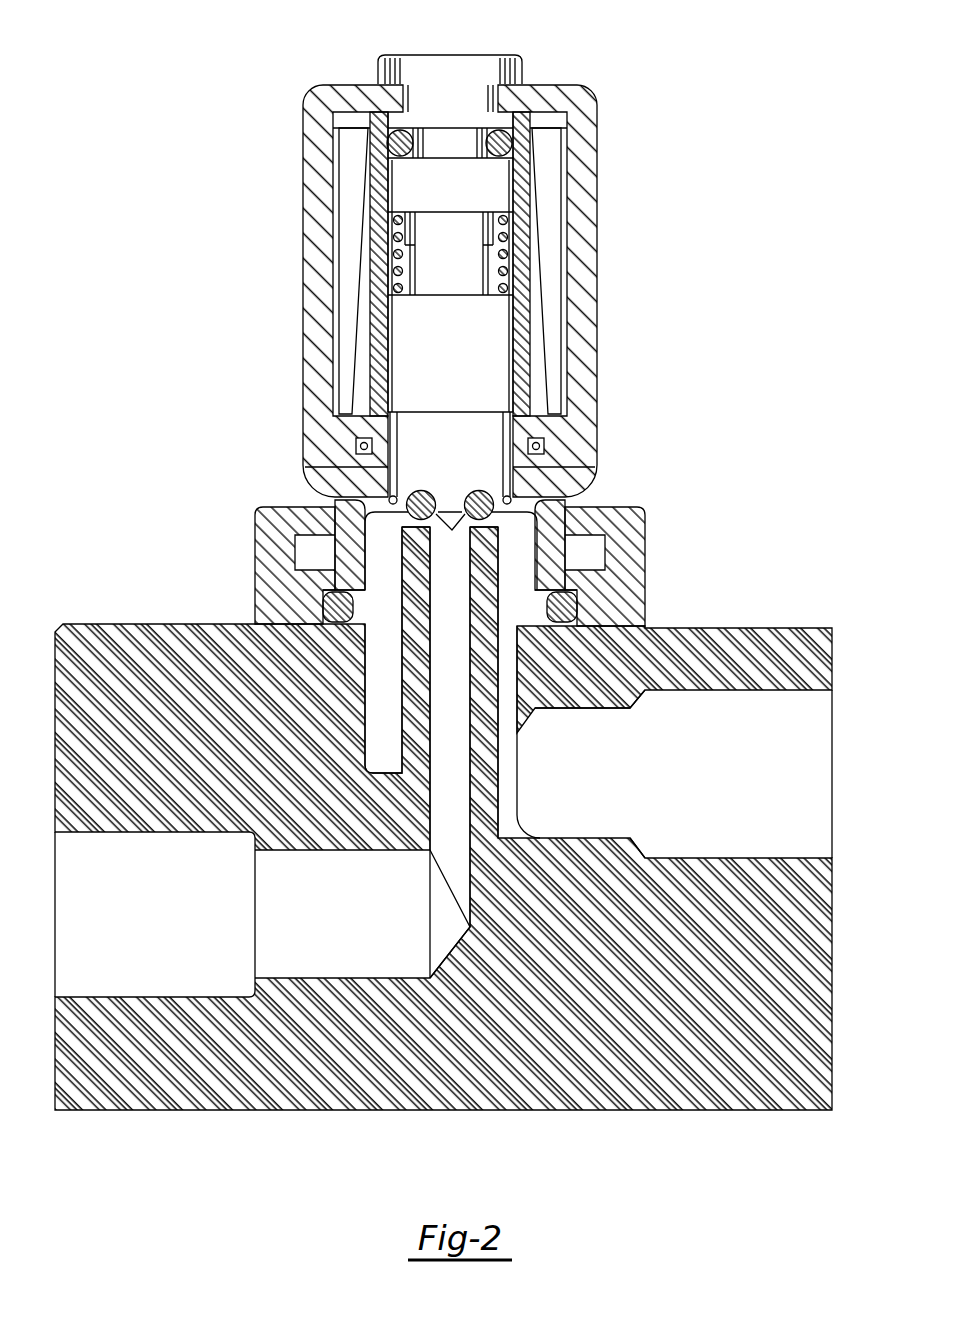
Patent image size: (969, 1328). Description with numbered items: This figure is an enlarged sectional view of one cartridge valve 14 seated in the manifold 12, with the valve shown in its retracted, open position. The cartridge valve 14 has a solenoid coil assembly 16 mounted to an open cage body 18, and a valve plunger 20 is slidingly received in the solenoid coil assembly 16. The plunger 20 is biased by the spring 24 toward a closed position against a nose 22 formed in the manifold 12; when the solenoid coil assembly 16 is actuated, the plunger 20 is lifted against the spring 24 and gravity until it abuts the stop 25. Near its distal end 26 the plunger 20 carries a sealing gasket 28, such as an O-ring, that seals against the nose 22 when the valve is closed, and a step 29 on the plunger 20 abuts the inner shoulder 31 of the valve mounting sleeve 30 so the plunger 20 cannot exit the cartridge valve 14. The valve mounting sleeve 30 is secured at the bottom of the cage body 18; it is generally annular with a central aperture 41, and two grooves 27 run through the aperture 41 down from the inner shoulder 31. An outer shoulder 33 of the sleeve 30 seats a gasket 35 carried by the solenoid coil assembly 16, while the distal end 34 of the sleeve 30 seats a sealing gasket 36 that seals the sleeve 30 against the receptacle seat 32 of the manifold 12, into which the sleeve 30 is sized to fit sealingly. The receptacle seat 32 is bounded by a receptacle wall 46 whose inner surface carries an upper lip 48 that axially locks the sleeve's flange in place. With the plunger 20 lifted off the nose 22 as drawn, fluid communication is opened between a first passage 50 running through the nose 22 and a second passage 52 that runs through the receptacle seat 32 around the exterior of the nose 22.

The manifold 12 is at (713, 626).
The cartridge valve 14 is at (592, 70).
The solenoid coil assembly 16 is at (545, 160).
The open cage body 18 is at (598, 234).
The valve plunger 20 is at (470, 341).
The nose 22 is at (481, 491).
The spring 24 is at (405, 238).
The stop 25 is at (464, 238).
The distal end 26 is at (453, 532).
The grooves 27 is at (395, 504).
The sealing gasket 28 is at (424, 490).
The step 29 is at (474, 417).
The valve mounting sleeve 30 is at (557, 510).
The inner shoulder 31 is at (355, 453).
The receptacle seat 32 is at (335, 590).
The outer shoulder 33 is at (328, 453).
The distal end 34 is at (364, 610).
The gasket 35 is at (543, 450).
The sealing gasket 36 is at (325, 615).
The central aperture 41 is at (527, 603).
The receptacle wall 46 is at (258, 516).
The upper lip 48 is at (602, 548).
The first passage 50 is at (472, 658).
The second passage 52 is at (580, 767).